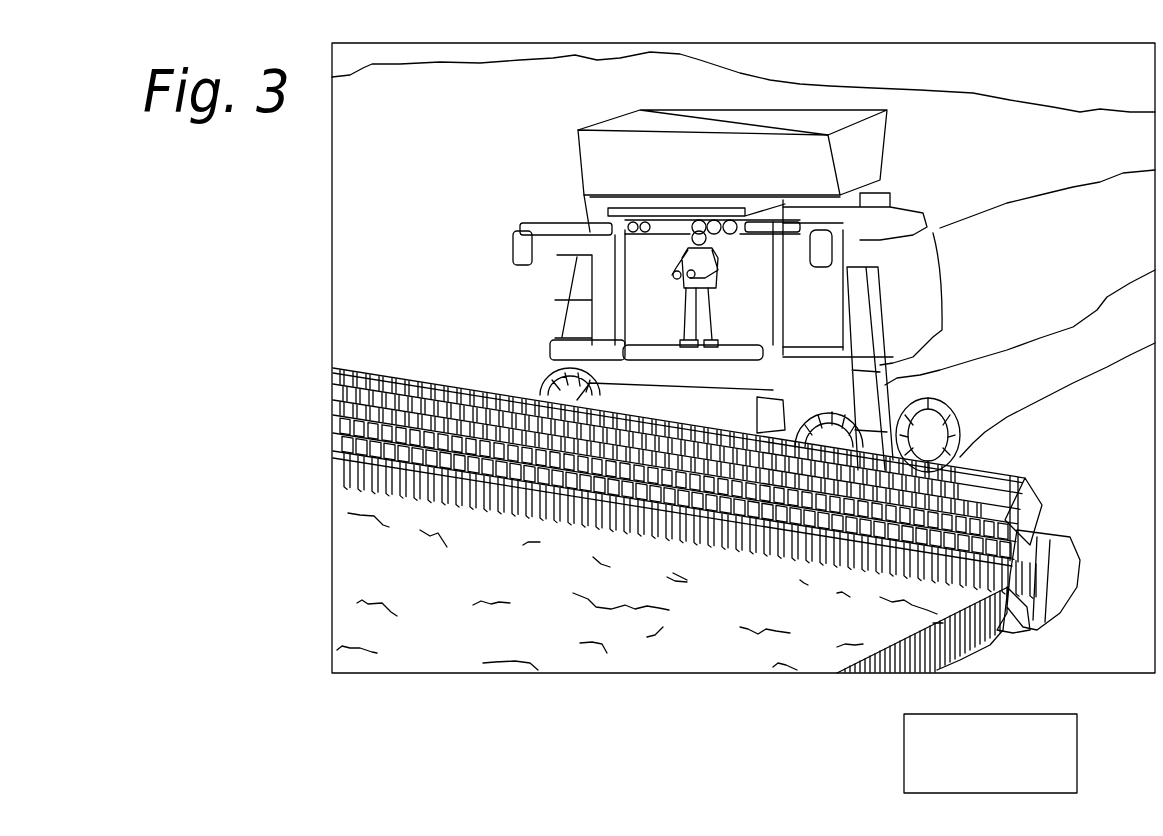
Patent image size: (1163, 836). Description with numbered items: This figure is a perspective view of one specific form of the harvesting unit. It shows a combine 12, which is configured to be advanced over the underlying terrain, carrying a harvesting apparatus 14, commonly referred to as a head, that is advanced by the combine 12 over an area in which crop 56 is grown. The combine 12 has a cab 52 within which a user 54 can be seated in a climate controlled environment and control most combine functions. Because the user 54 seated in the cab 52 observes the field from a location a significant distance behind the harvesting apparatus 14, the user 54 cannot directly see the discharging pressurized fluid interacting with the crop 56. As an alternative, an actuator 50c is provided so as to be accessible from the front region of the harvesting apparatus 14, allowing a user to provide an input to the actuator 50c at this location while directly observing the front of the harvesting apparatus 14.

The combine 12 is at (527, 344).
The harvesting apparatus 14 is at (411, 358).
The cab 52 is at (652, 217).
The user 54 is at (690, 277).
The crop 56 is at (705, 643).
The actuator 50c is at (1023, 580).